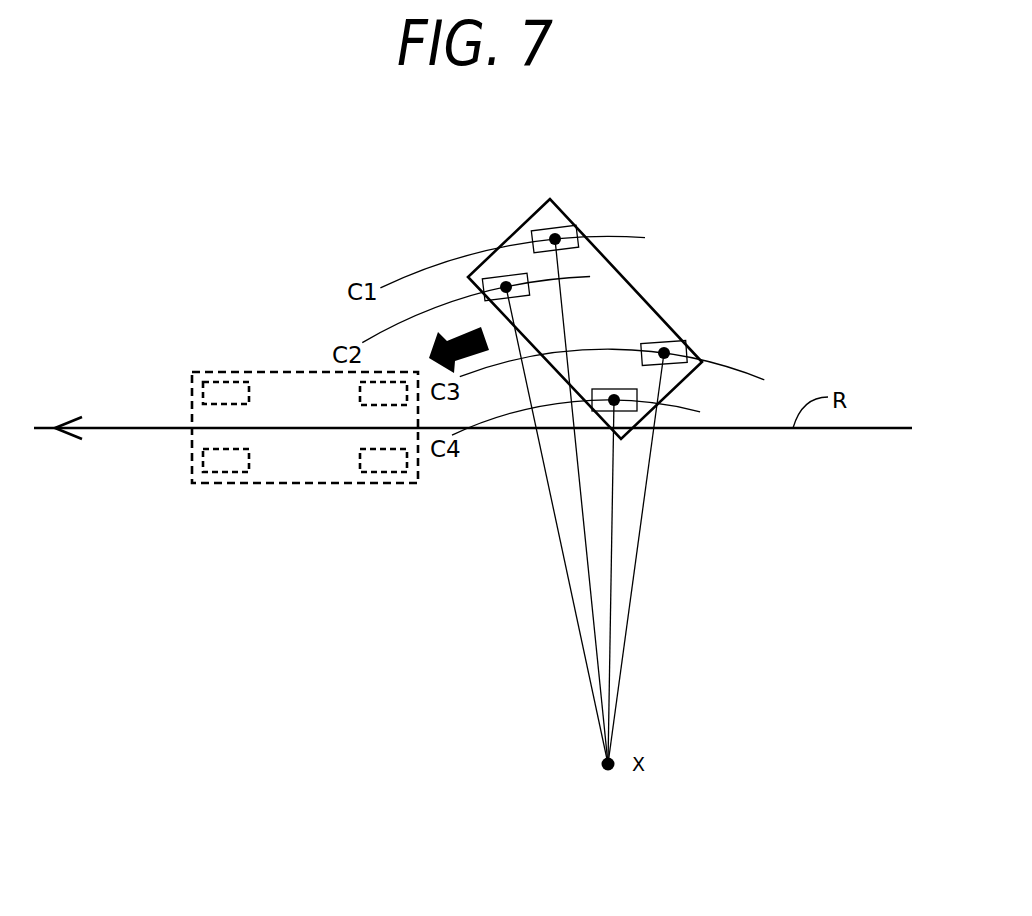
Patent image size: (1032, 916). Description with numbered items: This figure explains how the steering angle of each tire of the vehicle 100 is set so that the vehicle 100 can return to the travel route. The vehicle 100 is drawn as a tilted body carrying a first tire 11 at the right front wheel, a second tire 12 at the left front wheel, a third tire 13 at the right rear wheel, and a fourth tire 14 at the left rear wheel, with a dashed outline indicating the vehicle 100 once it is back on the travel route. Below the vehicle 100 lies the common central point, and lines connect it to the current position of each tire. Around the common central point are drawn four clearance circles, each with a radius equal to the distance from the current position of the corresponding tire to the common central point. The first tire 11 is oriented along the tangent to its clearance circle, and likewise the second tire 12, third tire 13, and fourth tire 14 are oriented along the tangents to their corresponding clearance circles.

The vehicle 100 is at (655, 285).
The first tire 11 is at (547, 228).
The second tire 12 is at (493, 277).
The third tire 13 is at (662, 339).
The fourth tire 14 is at (607, 412).